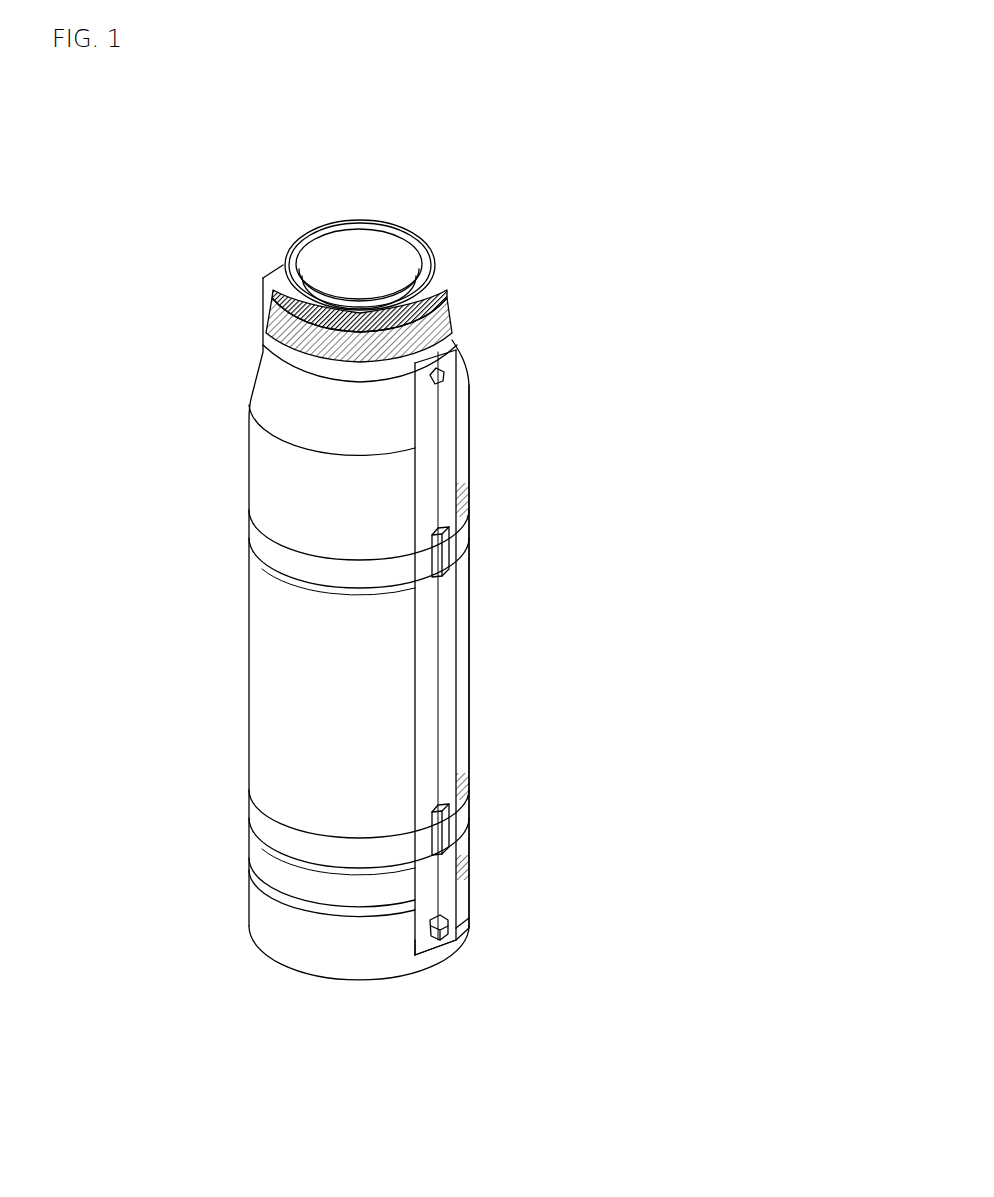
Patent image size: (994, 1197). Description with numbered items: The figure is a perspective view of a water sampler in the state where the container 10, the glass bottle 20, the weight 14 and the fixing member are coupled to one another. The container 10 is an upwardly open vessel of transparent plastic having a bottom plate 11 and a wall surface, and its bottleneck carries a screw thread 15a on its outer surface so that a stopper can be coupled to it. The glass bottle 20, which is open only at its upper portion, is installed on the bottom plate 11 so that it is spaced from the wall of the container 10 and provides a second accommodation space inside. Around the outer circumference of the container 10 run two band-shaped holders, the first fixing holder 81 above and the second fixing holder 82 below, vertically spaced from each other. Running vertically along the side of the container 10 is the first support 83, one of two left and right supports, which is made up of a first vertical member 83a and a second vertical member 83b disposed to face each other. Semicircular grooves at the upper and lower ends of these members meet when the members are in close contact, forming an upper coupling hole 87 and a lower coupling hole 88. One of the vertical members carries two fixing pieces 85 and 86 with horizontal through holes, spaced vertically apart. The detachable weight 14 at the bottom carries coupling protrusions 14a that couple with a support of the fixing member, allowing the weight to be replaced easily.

The container 10 is at (270, 388).
The bottom plate 11 is at (273, 866).
The glass bottle 20 is at (360, 252).
The screw thread 15a is at (432, 305).
The first support 83 is at (698, 493).
The first vertical member 83a is at (427, 638).
The second vertical member 83b is at (450, 685).
The weight 14 is at (393, 965).
The coupling protrusion 14a is at (457, 925).
The coupling hole 87 is at (439, 372).
The coupling hole 88 is at (437, 927).
The first fixing holder 81 is at (263, 540).
The fixing piece 85 is at (455, 530).
The second fixing holder 82 is at (250, 800).
The fixing piece 86 is at (457, 820).